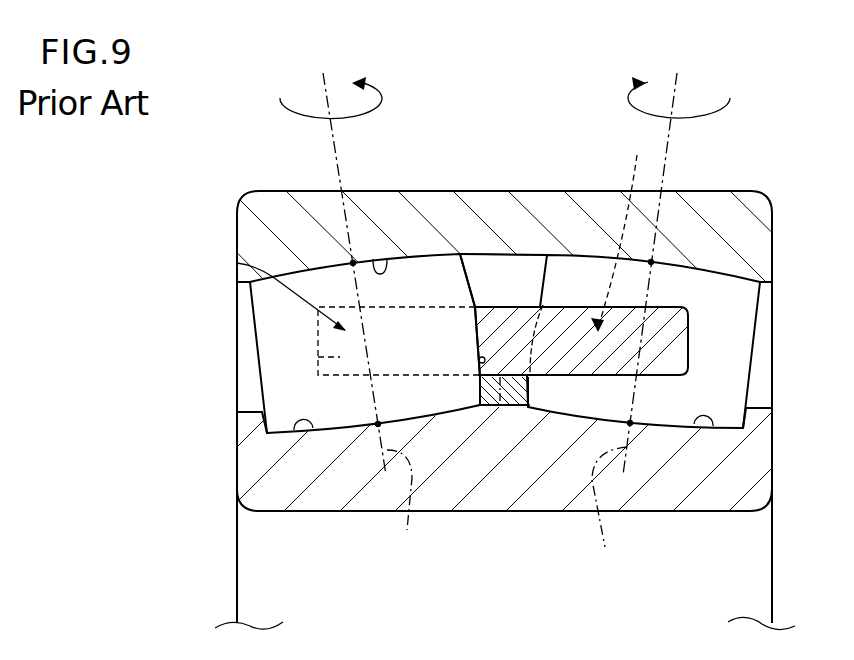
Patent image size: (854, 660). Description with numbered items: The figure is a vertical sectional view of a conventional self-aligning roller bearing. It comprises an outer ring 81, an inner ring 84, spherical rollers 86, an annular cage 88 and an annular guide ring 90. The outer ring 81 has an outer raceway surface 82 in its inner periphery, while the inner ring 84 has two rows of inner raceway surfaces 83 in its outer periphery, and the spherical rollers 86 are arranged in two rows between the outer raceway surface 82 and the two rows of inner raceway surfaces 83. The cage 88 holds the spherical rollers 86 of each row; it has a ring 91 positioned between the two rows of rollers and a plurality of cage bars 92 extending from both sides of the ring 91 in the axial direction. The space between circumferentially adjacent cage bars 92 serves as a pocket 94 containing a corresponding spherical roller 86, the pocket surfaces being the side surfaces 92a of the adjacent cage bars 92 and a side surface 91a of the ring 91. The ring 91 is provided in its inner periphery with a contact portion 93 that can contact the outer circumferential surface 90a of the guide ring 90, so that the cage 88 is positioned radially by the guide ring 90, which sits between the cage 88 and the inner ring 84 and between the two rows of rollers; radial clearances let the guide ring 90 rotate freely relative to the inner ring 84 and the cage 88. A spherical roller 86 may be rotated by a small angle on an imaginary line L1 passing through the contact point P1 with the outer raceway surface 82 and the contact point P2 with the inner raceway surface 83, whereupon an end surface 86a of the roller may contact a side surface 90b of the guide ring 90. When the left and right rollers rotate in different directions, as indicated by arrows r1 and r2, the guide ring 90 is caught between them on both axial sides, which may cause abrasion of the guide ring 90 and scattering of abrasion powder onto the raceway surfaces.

The outer ring 81 is at (262, 238).
The outer raceway surface 82 is at (376, 259).
The inner raceway surface 83 is at (294, 430).
The inner ring 84 is at (270, 460).
The spherical roller 86 is at (273, 347).
The end surface 86a is at (479, 360).
The cage 88 is at (515, 300).
The guide ring 90 is at (513, 407).
The outer circumferential surface 90a is at (543, 305).
The side surface 90b is at (478, 405).
The ring 91 is at (482, 312).
The side surface 91a is at (478, 340).
The cage bar 92 is at (312, 331).
The side surface 92a is at (333, 357).
The contact portion 93 is at (500, 405).
The pocket 94 is at (237, 263).
The contact point P1 is at (353, 263).
The contact point P2 is at (378, 424).
The imaginary line L1 is at (507, 510).
The arrow r1 is at (333, 262).
The arrow r2 is at (676, 262).